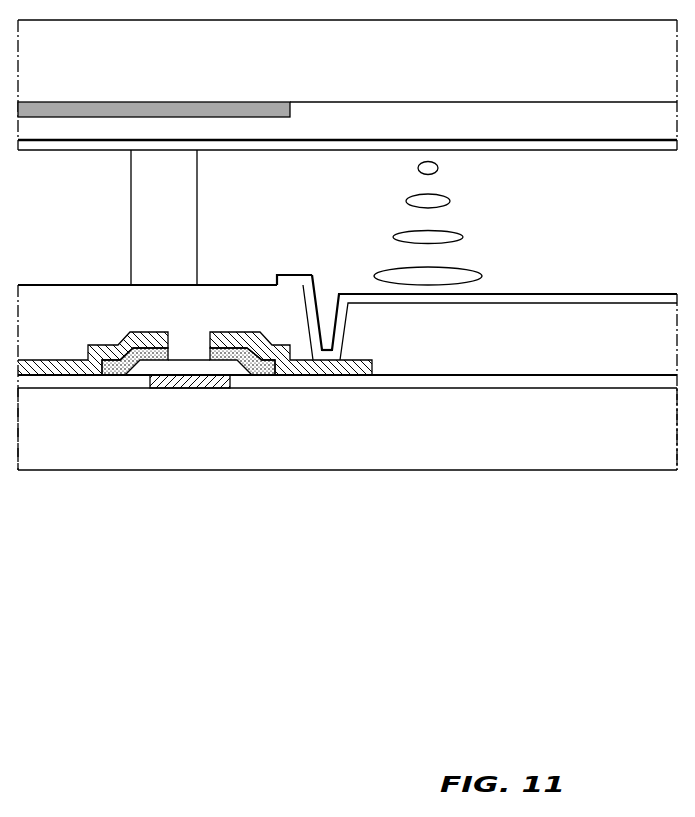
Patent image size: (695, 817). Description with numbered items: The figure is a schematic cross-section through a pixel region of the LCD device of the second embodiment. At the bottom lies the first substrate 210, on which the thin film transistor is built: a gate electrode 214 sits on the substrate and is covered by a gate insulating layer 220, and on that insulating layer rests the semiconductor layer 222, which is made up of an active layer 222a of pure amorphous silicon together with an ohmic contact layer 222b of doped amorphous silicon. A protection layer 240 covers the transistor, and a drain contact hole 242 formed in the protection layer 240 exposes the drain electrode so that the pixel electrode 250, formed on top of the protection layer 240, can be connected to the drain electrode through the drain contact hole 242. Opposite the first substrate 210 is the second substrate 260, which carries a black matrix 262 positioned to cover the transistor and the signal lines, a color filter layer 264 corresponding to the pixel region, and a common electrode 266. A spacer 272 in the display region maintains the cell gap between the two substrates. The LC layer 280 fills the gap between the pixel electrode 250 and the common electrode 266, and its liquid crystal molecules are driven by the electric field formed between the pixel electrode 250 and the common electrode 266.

The first substrate 210 is at (625, 458).
The gate electrode 214 is at (199, 388).
The gate insulating layer 220 is at (298, 388).
The semiconductor layer 222 is at (195, 401).
The active layer 222a is at (125, 375).
The ohmic contact layer 222b is at (107, 375).
The protection layer 240 is at (590, 333).
The drain contact hole 242 is at (327, 298).
The pixel electrode 250 is at (540, 297).
The second substrate 260 is at (625, 69).
The black matrix 262 is at (147, 110).
The color filter layer 264 is at (317, 117).
The common electrode 266 is at (395, 147).
The spacer 272 is at (145, 220).
The LC layer 280 is at (625, 196).